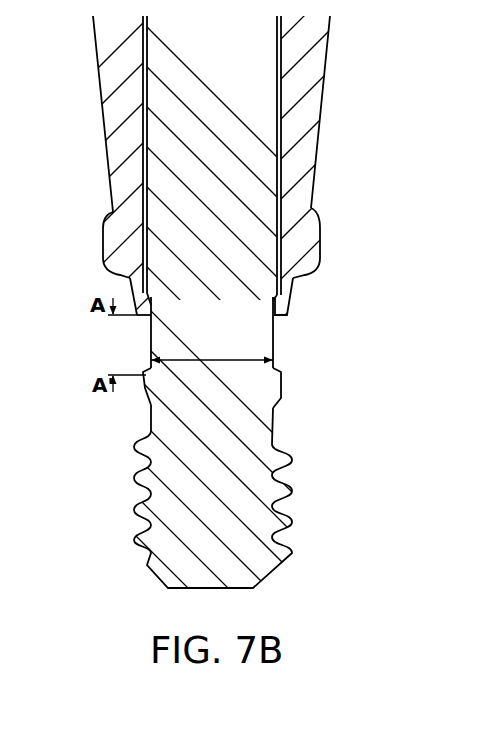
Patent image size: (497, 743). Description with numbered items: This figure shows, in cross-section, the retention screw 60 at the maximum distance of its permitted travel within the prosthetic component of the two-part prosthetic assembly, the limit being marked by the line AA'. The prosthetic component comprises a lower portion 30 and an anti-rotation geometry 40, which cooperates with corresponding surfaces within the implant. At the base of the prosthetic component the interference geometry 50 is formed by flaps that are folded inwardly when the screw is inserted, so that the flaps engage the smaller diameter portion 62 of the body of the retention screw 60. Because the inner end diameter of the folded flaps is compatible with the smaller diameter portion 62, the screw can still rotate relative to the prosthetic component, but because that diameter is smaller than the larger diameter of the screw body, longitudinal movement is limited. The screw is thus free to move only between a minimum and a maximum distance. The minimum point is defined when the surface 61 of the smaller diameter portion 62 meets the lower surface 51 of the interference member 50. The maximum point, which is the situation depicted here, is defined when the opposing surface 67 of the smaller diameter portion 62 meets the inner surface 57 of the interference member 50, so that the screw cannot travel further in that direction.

The lower portion 30 is at (300, 158).
The anti-rotation geometry 40 is at (310, 248).
The interference geometry 50 is at (285, 298).
The lower surface of the interference member 51 is at (145, 319).
The inner surface of the interference member 57 is at (128, 283).
The retention screw 60 is at (270, 490).
The surface of the smaller diameter portion 61 is at (148, 366).
The smaller diameter portion 62 is at (212, 376).
The opposing surface of the smaller diameter portion 67 is at (148, 292).